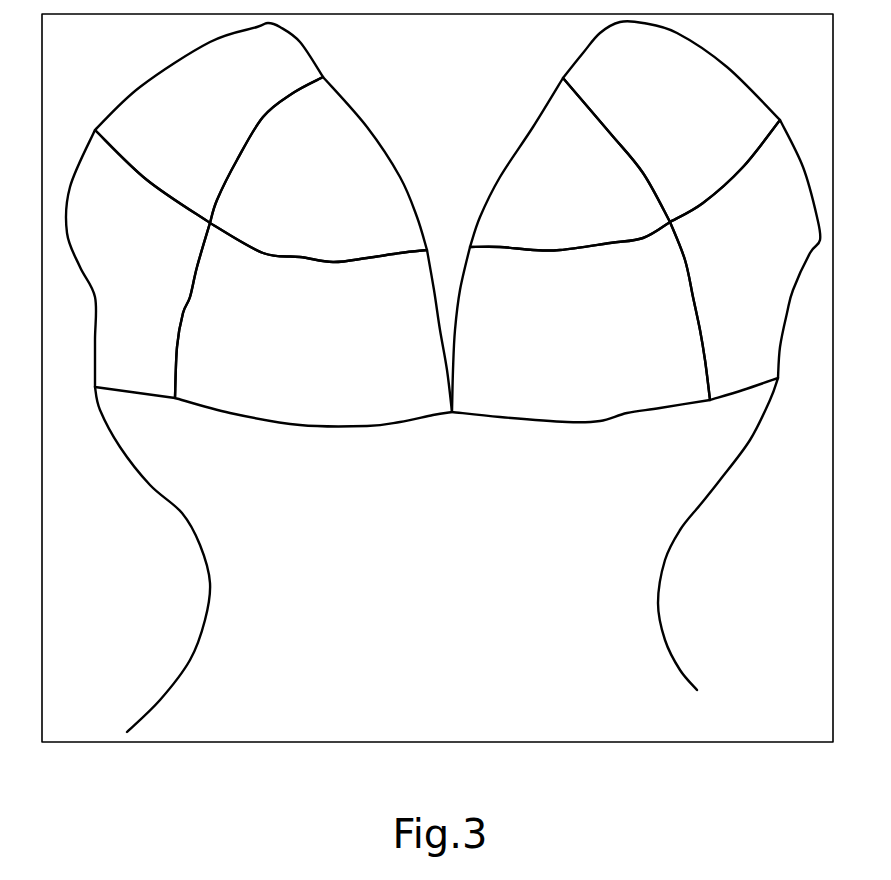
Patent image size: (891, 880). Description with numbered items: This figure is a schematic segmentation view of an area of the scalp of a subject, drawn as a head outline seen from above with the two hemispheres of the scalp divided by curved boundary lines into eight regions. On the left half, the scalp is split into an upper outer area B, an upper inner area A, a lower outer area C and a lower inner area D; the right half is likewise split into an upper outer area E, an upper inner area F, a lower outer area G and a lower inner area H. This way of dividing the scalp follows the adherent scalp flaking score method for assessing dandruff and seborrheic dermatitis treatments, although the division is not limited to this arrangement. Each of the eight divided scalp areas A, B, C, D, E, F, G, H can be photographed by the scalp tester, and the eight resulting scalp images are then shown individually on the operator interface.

The scalp area A is at (318, 169).
The scalp area B is at (209, 123).
The scalp area C is at (138, 264).
The scalp area D is at (313, 325).
The scalp area E is at (671, 121).
The scalp area F is at (570, 164).
The scalp area G is at (745, 260).
The scalp area H is at (581, 322).